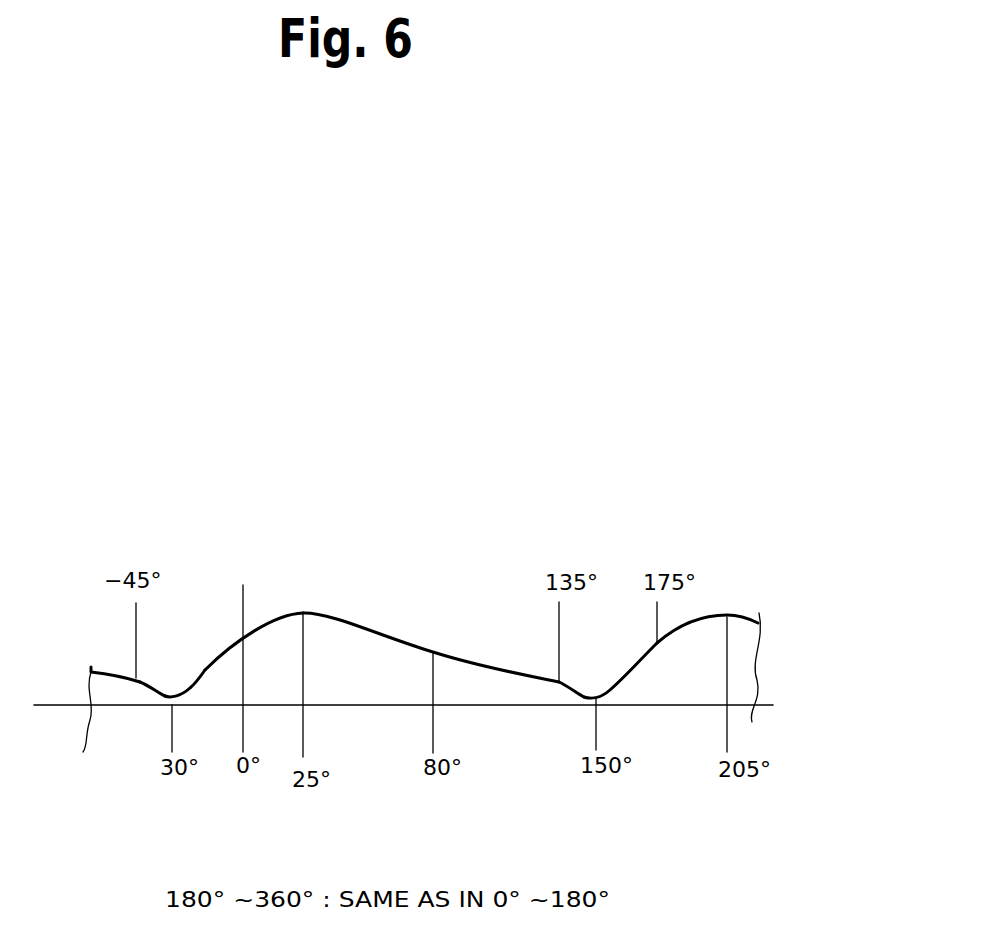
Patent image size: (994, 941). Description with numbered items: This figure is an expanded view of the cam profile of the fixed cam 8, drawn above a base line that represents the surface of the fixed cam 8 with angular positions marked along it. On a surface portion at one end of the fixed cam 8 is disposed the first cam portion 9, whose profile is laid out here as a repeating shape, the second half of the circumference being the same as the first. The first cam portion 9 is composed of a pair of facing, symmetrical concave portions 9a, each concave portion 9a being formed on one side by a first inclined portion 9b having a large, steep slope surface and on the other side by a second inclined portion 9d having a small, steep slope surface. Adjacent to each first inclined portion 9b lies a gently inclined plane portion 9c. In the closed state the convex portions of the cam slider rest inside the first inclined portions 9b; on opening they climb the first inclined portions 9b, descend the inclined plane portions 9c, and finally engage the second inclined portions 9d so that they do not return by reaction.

The fixed cam 8 is at (378, 707).
The first cam portion 9 is at (478, 610).
The concave portion 9a is at (167, 690).
The first inclined portion 9b is at (265, 623).
The gently inclined plane portion 9c is at (97, 668).
The second inclined portion 9d is at (140, 686).